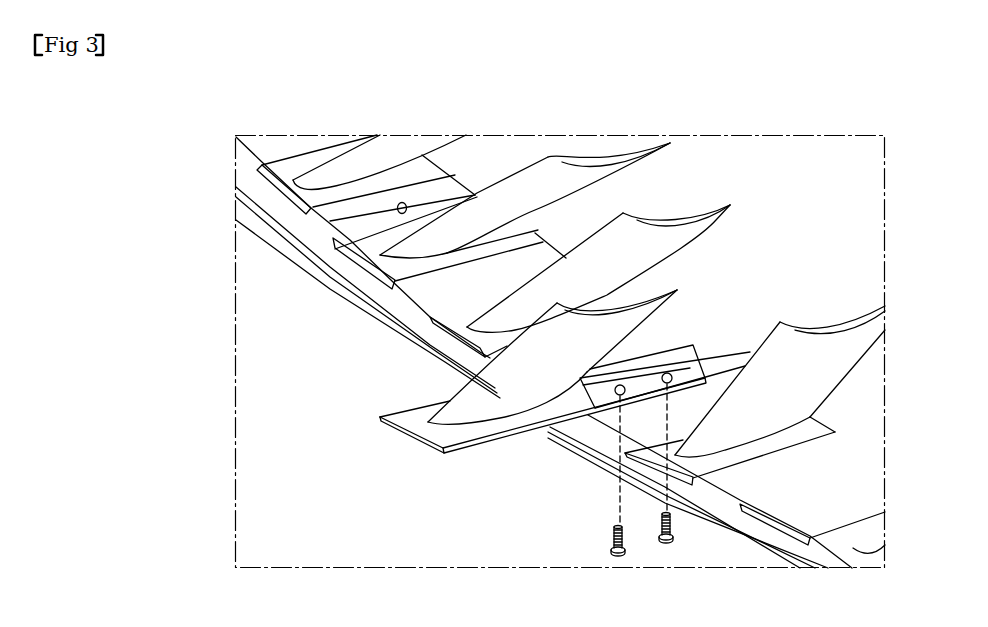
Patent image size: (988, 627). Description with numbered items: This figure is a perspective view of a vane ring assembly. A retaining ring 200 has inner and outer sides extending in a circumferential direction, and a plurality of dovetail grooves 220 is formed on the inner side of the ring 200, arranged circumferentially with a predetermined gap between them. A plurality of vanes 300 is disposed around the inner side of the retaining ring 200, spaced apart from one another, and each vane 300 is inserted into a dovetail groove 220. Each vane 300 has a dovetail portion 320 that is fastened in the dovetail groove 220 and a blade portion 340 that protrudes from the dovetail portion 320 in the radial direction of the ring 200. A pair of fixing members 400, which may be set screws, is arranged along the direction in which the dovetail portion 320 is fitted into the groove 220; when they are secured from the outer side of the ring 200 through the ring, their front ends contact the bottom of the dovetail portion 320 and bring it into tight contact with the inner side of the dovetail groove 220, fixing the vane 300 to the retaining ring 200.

The retaining ring 200 is at (288, 230).
The dovetail groove 220 is at (690, 374).
The vane 300 is at (146, 363).
The dovetail portion 320 is at (445, 434).
The blade portion 340 is at (517, 371).
The fixing member 400 is at (626, 548).